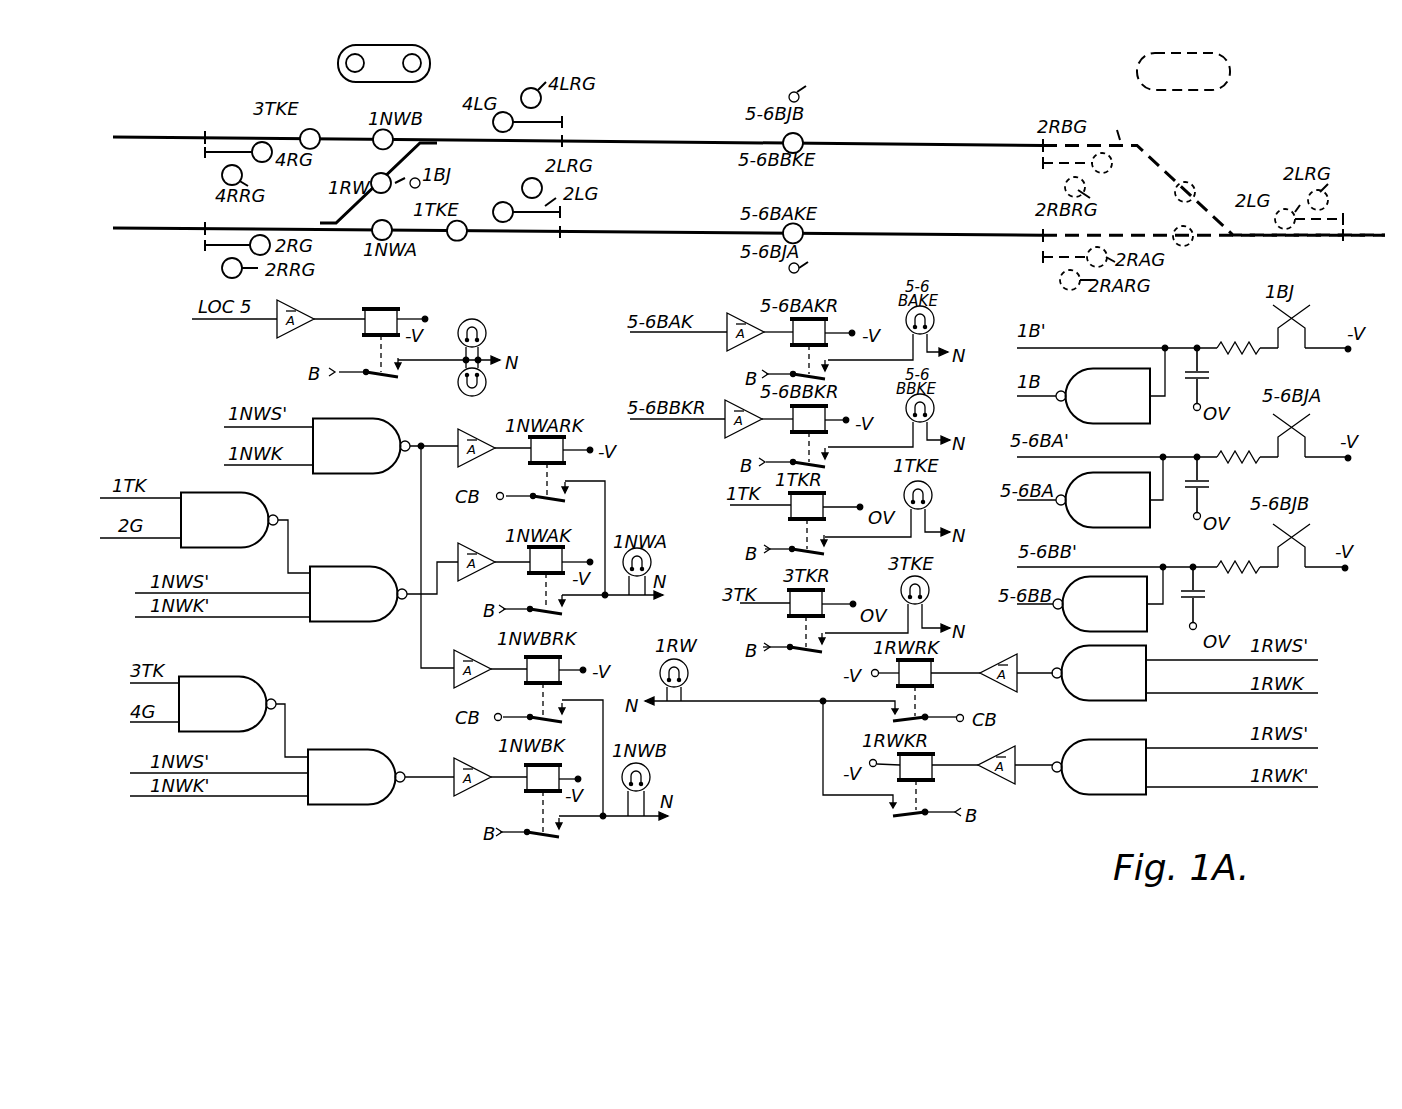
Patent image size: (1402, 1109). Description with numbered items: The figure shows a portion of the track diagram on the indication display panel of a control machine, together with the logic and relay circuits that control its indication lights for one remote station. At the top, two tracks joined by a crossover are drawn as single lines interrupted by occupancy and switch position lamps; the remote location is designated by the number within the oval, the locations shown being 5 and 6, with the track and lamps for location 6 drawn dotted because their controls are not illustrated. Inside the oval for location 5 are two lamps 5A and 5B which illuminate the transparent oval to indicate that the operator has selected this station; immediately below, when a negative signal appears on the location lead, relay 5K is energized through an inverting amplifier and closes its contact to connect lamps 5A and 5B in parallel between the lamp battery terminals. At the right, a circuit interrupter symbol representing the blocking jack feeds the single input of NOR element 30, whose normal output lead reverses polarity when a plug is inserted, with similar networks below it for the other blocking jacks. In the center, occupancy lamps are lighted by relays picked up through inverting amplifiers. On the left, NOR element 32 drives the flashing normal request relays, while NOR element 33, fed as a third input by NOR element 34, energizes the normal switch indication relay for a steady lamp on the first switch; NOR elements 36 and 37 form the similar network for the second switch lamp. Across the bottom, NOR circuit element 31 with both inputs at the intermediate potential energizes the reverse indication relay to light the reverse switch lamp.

The remote location 5 is at (384, 63).
The remote location 6 is at (1183, 71).
The relay 5K is at (378, 332).
The lamp 5A is at (472, 322).
The lamp 5B is at (484, 385).
The NOR element 30 is at (1091, 386).
The NOR circuit element 31 is at (1185, 767).
The NOR element 32 is at (317, 446).
The NOR element 33 is at (271, 594).
The NOR element 34 is at (189, 520).
The NOR element 36 is at (267, 777).
The second NOR circuit 37 is at (203, 704).